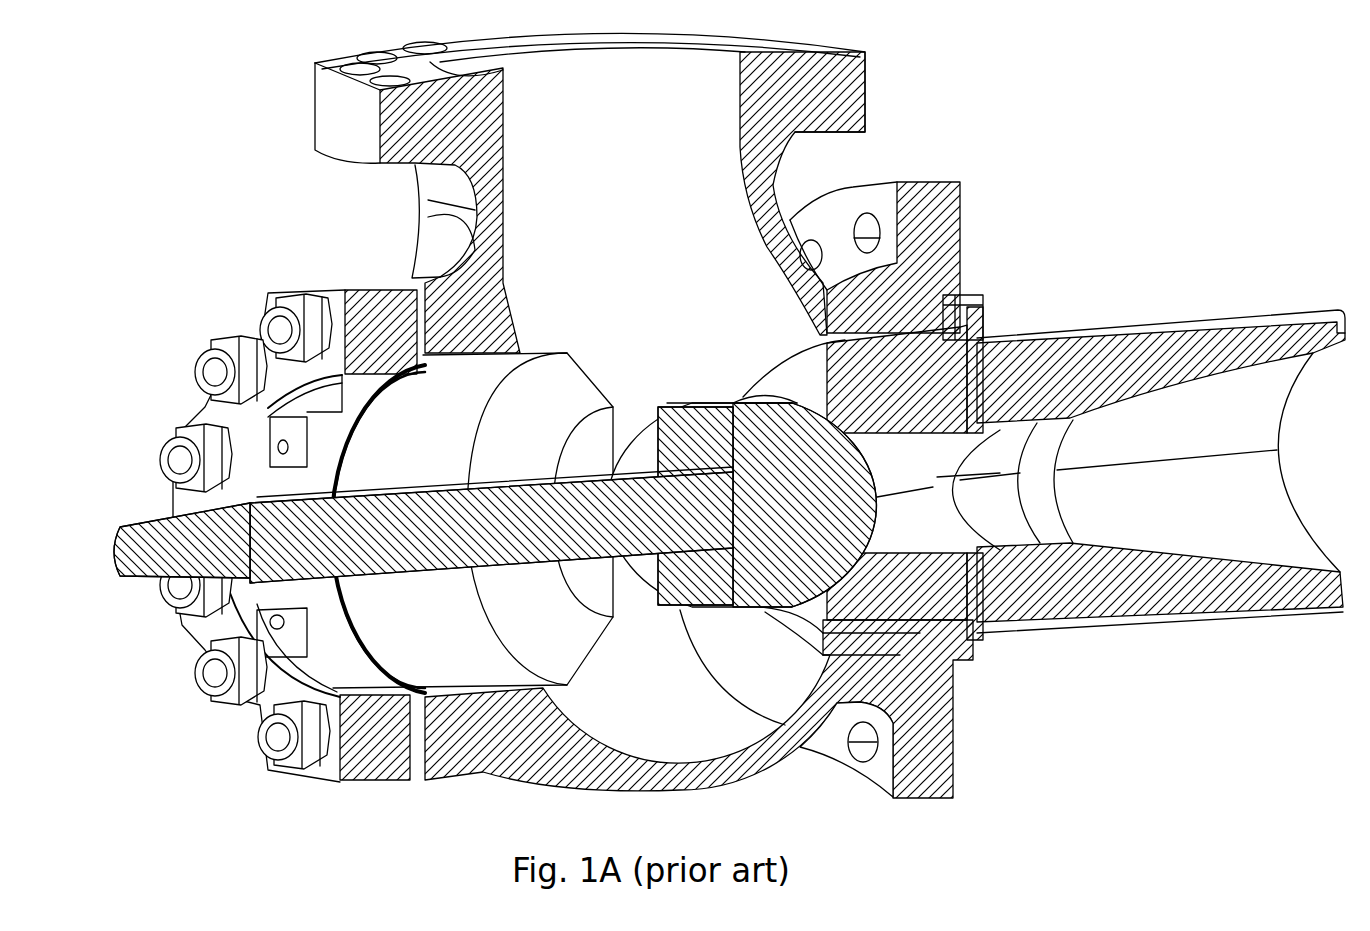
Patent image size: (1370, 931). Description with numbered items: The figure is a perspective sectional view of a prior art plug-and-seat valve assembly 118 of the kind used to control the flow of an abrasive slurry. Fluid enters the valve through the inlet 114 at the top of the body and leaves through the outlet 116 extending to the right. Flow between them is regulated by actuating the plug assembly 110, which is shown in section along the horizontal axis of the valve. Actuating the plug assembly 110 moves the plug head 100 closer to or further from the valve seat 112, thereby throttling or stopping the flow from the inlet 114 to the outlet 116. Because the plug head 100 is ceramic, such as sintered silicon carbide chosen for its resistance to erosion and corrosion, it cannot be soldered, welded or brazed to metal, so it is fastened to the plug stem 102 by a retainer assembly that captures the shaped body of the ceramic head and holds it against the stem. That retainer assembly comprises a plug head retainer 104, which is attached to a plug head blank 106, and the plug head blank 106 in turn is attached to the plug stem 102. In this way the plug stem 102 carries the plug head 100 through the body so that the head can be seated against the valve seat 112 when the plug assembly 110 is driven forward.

The plug head 100 is at (819, 513).
The plug stem 102 is at (538, 536).
The plug head retainer 104 is at (728, 397).
The plug head blank 106 is at (716, 460).
The plug assembly 110 is at (145, 521).
The valve seat 112 is at (919, 393).
The inlet 114 is at (629, 141).
The outlet 116 is at (1216, 506).
The plug-and-seat valve assembly 118 is at (226, 125).